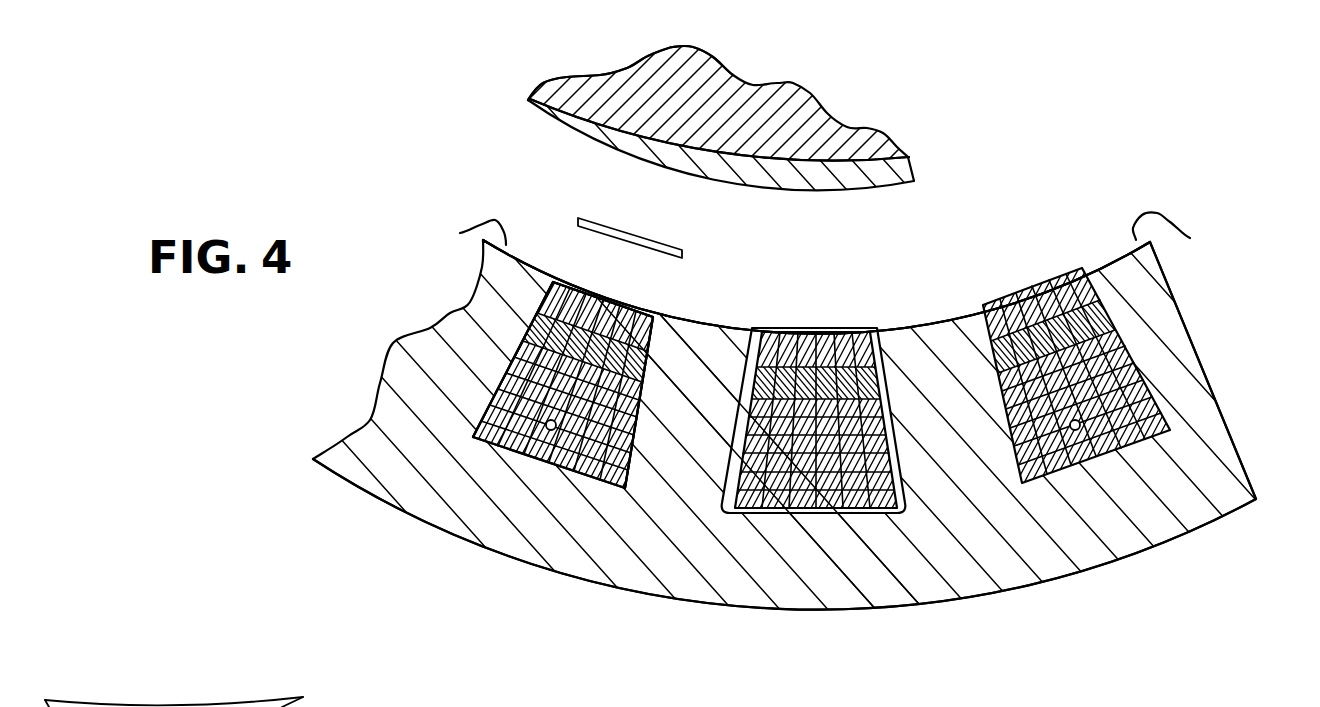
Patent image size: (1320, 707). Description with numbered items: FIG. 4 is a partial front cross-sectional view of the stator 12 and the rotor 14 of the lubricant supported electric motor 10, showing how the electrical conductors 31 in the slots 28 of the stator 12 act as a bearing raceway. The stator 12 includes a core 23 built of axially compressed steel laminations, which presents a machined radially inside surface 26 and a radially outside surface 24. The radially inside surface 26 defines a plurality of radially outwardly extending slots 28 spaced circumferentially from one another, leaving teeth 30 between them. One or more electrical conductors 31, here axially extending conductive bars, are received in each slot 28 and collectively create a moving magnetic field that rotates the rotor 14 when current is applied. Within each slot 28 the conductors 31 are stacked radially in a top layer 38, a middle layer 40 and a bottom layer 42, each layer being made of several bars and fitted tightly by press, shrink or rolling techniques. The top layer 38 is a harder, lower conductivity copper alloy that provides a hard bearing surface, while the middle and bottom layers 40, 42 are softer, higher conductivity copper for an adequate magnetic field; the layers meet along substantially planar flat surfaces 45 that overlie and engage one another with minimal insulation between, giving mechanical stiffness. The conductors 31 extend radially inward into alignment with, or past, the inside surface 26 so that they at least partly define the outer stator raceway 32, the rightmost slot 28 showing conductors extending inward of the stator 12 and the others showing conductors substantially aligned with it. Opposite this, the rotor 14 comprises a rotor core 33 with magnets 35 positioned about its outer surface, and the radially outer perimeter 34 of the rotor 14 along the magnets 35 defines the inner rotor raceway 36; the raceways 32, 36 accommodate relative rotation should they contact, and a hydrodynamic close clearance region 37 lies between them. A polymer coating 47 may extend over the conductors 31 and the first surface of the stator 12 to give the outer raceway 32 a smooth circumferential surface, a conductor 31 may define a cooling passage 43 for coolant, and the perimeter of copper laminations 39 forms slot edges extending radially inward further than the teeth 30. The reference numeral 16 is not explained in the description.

The electric motor 10 is at (347, 152).
The stator 12 is at (397, 511).
The rotor 14 is at (883, 188).
The rotor assembly 16 is at (460, 120).
The core 23 is at (1067, 548).
The radially outside surface 24 is at (907, 610).
The radially inside surface 26 is at (1190, 238).
The slot 28 is at (583, 473).
The tooth 30 is at (705, 462).
The electrical conductor 31 is at (493, 392).
The outer stator raceway 32 is at (460, 233).
The rotor core 33 is at (657, 90).
The radially outer perimeter 34 is at (747, 160).
The inner rotor raceway 36 is at (765, 192).
The magnet 35 is at (603, 123).
The close clearance region 37 is at (713, 323).
The top layer 38 is at (570, 280).
The copper laminations 39 is at (907, 503).
The middle layer 40 is at (655, 397).
The bottom layer 42 is at (628, 462).
The cooling passage 43 is at (549, 436).
The flat surface 45 is at (548, 327).
The polymer coating 47 is at (630, 232).